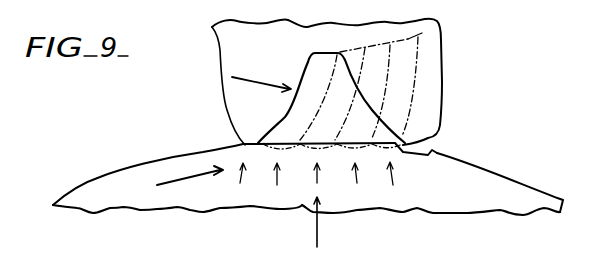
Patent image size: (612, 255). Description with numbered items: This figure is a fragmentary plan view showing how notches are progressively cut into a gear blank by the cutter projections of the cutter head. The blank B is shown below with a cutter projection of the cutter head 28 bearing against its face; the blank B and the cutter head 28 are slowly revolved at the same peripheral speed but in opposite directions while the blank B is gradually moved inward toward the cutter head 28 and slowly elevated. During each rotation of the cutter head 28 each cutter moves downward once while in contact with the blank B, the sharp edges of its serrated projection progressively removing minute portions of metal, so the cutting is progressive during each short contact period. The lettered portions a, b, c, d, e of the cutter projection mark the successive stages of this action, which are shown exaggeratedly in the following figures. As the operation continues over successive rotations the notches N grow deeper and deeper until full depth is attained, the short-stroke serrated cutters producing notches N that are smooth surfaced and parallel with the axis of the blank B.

The cutter head 28 is at (450, 22).
The blank B is at (508, 182).
The notches N is at (430, 153).
The portion of the cutter projection a is at (239, 182).
The portion of the cutter projection b is at (276, 183).
The portion of the cutter projection c is at (318, 183).
The portion of the cutter projection d is at (360, 183).
The portion of the cutter projection e is at (393, 183).